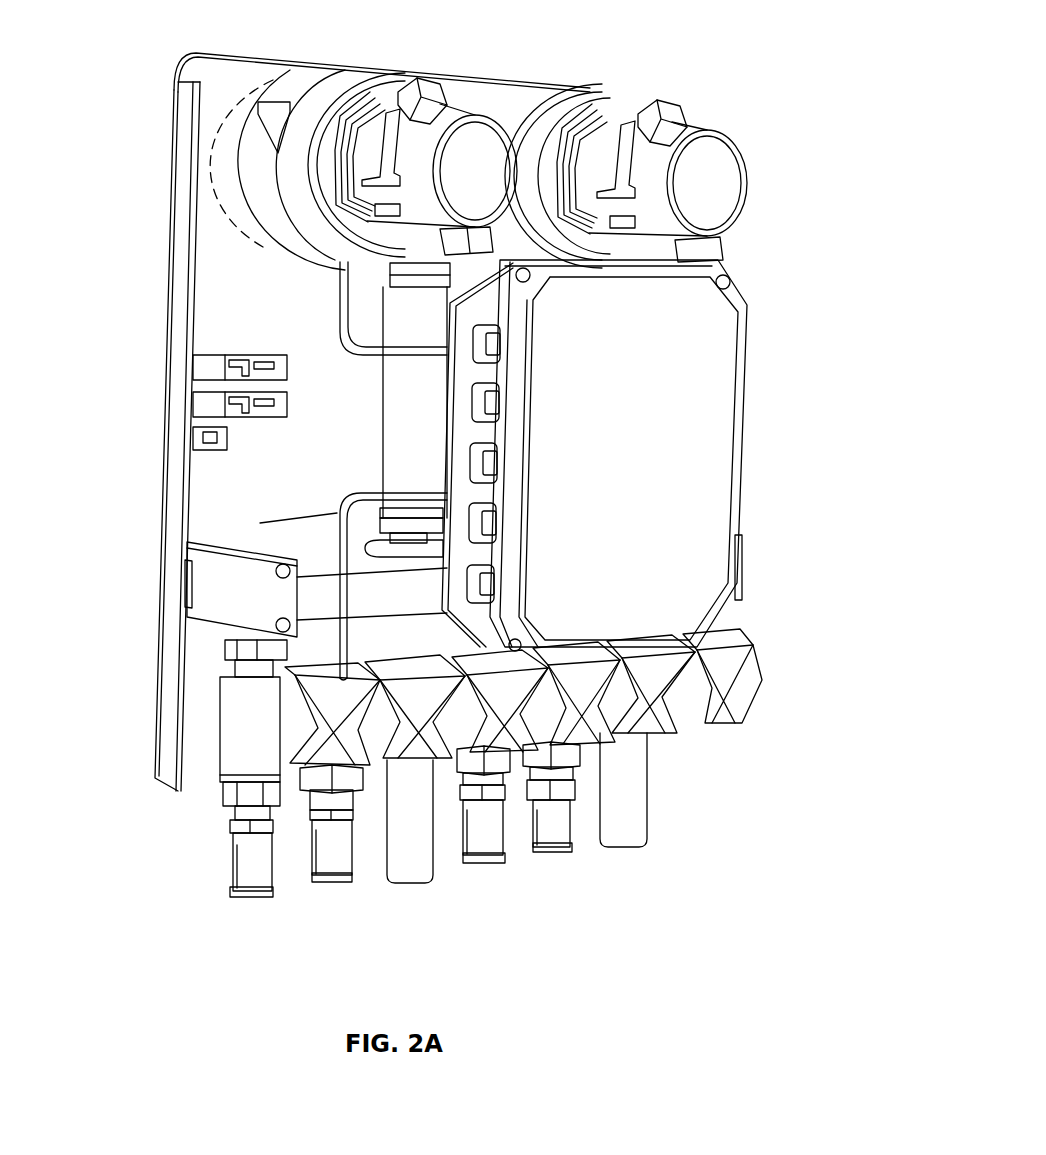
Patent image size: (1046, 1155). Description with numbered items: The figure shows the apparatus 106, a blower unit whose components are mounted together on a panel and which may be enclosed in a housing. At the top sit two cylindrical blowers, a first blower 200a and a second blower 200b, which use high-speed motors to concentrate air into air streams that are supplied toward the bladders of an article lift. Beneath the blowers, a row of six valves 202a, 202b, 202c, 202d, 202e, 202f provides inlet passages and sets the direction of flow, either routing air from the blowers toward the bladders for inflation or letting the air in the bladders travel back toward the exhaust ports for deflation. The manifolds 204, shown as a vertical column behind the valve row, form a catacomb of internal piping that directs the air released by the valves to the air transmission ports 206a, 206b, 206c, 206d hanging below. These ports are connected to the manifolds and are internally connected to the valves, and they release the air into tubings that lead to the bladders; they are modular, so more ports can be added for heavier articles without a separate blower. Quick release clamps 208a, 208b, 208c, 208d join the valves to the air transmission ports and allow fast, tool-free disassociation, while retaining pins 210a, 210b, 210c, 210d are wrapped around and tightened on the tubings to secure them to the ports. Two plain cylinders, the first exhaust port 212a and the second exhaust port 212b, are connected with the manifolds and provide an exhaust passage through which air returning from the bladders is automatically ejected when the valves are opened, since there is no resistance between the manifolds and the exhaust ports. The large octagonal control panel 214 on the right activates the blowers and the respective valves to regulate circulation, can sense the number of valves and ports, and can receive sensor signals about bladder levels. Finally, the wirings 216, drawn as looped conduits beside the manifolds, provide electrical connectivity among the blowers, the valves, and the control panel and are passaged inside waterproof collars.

The apparatus 106 is at (133, 67).
The first blower 200a is at (473, 113).
The second blower 200b is at (707, 147).
The valve 202a is at (345, 740).
The valve 202b is at (443, 727).
The valve 202c is at (472, 676).
The valve 202d is at (640, 660).
The valve 202e is at (615, 690).
The valve 202f is at (723, 705).
The manifolds 204 is at (380, 485).
The air transmission port 206a is at (252, 866).
The air transmission port 206b is at (330, 842).
The air transmission port 206c is at (483, 830).
The air transmission port 206d is at (555, 818).
The quick release clamp 208a is at (218, 790).
The quick release clamp 208b is at (317, 782).
The quick release clamp 208c is at (507, 757).
The quick release clamp 208d is at (573, 750).
The retaining pin 210a is at (240, 897).
The retaining pin 210b is at (325, 882).
The retaining pin 210c is at (473, 860).
The retaining pin 210d is at (537, 850).
The first exhaust port 212a is at (403, 857).
The second exhaust port 212b is at (637, 840).
The control panel 214 is at (728, 407).
The wirings 216 is at (337, 310).